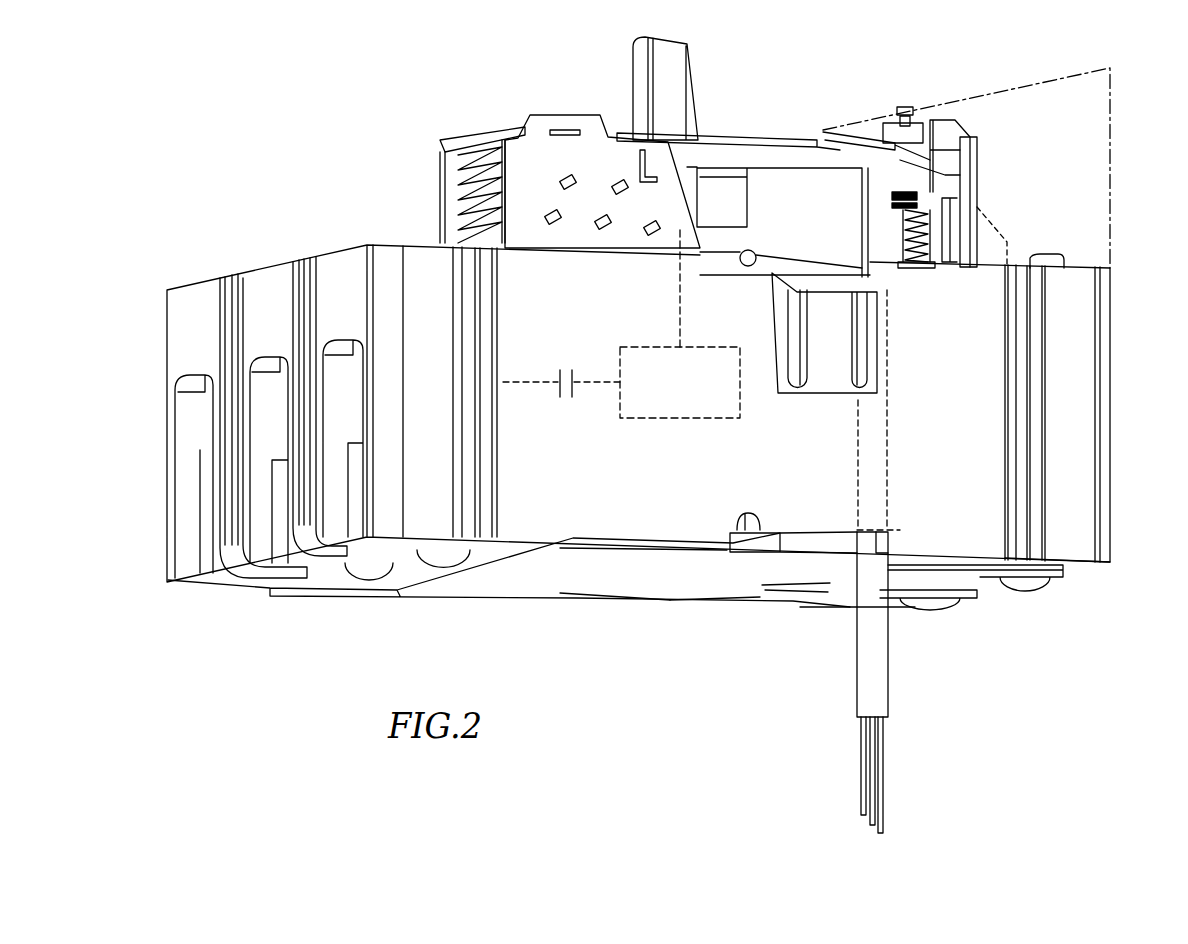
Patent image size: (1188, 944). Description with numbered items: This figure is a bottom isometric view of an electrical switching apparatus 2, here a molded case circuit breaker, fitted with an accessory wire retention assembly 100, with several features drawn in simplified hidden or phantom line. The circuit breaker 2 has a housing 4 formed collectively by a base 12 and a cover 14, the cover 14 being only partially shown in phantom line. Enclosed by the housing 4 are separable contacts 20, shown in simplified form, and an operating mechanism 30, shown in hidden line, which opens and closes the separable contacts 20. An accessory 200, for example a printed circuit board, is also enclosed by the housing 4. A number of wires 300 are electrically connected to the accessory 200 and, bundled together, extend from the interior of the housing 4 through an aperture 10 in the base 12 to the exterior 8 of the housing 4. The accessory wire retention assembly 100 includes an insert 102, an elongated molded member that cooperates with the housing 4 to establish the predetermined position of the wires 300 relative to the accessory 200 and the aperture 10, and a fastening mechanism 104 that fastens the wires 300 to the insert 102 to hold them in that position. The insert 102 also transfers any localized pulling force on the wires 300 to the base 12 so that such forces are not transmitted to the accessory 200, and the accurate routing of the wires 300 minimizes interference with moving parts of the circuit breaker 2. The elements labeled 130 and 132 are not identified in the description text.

The electrical switching apparatus 2 is at (1049, 656).
The housing 4 is at (1122, 525).
The exterior 8 is at (800, 614).
The aperture 10 is at (877, 530).
The base 12 is at (555, 487).
The cover 14 is at (1110, 145).
The separable contacts 20 is at (554, 368).
The operating mechanism 30 is at (688, 420).
The accessory wire retention assembly 100 is at (862, 200).
The insert 102 is at (975, 207).
The fastening mechanism 104 is at (922, 268).
The arm 130 is at (945, 186).
The fastener 132 is at (933, 192).
The accessory 200 is at (940, 157).
The wires 300 is at (890, 243).